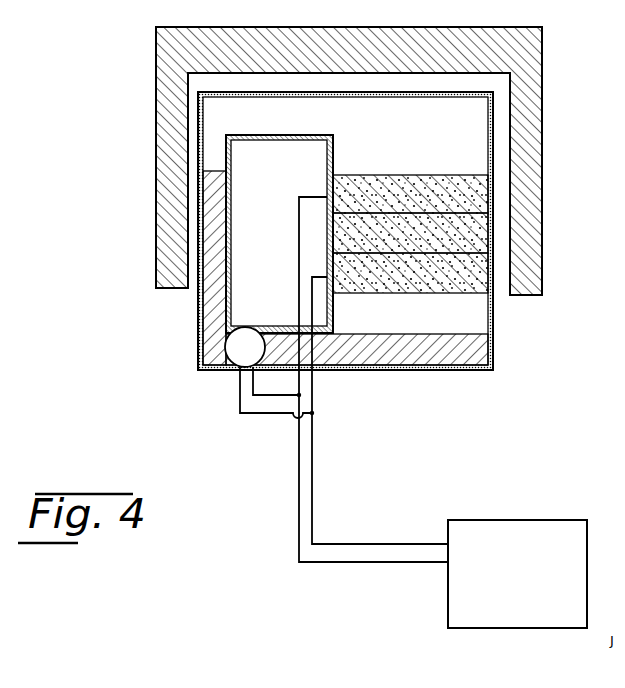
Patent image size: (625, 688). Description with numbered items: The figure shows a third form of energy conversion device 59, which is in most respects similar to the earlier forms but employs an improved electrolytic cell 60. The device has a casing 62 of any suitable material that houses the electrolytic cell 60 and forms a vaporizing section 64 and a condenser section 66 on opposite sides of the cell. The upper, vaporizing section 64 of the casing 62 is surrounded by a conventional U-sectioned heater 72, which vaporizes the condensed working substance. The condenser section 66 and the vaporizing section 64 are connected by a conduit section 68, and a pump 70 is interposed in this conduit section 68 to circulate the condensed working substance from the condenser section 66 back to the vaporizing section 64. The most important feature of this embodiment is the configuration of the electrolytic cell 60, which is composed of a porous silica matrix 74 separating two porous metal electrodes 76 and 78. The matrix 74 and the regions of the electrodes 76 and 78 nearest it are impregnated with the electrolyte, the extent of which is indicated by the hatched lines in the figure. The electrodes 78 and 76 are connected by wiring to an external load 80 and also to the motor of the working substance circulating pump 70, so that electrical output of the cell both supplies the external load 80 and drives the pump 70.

The energy conversion device 59 is at (154, 90).
The U-sectioned heater 72 is at (155, 148).
The casing 62 is at (388, 375).
The vaporizing section 64 is at (430, 133).
The condenser section 66 is at (470, 327).
The conduit section 68 is at (198, 341).
The electrolytic cell 60 is at (326, 184).
The pump 70 is at (245, 340).
The porous silica matrix 74 is at (330, 238).
The porous metal electrode 76 is at (428, 284).
The porous metal electrode 78 is at (412, 178).
The external load 80 is at (521, 568).